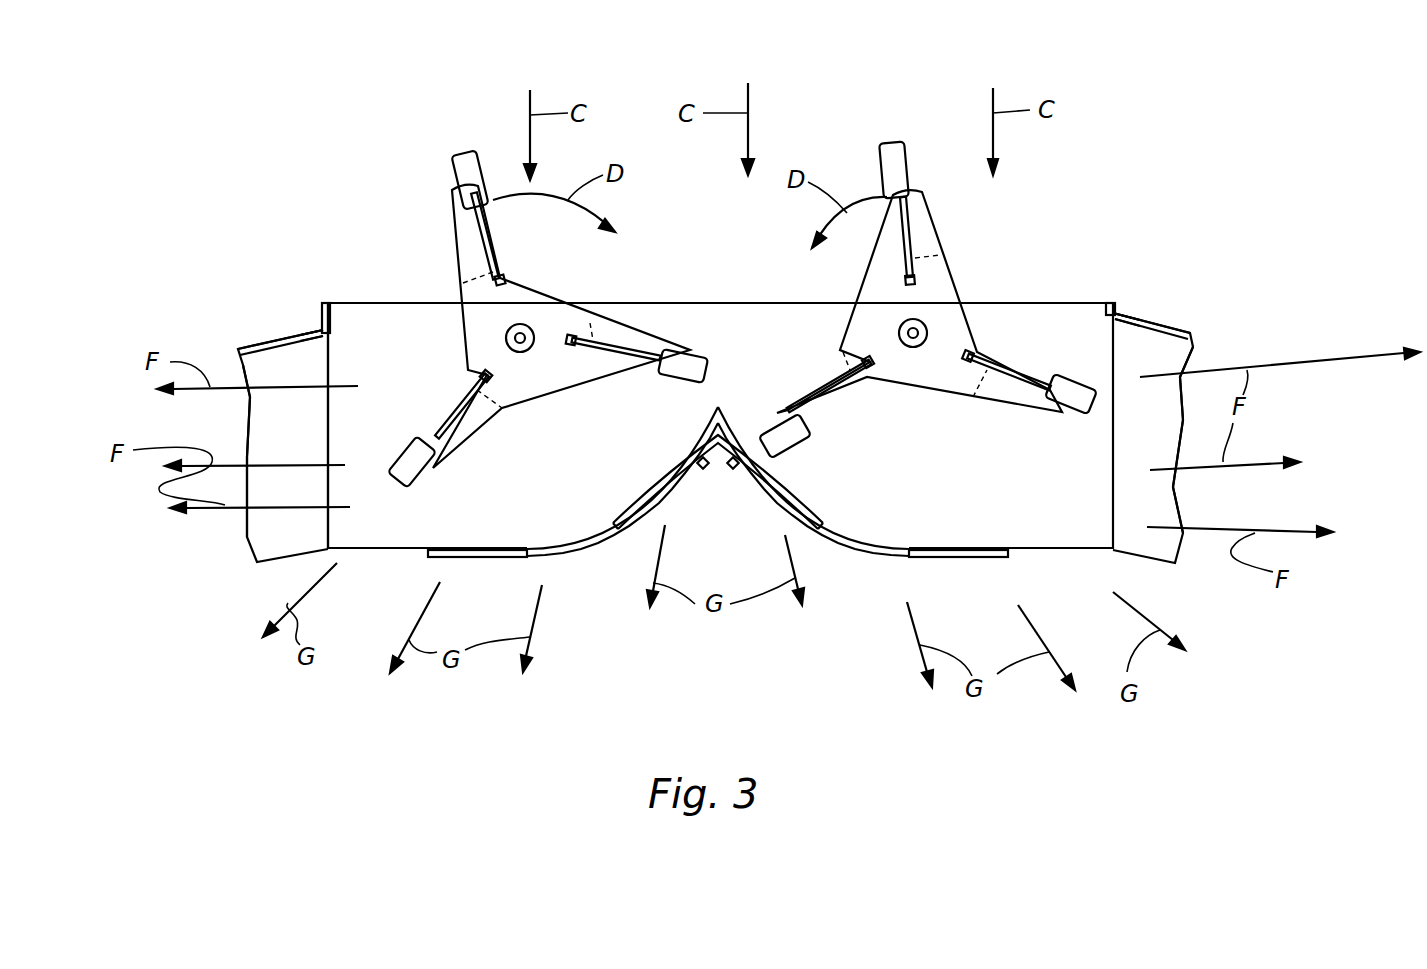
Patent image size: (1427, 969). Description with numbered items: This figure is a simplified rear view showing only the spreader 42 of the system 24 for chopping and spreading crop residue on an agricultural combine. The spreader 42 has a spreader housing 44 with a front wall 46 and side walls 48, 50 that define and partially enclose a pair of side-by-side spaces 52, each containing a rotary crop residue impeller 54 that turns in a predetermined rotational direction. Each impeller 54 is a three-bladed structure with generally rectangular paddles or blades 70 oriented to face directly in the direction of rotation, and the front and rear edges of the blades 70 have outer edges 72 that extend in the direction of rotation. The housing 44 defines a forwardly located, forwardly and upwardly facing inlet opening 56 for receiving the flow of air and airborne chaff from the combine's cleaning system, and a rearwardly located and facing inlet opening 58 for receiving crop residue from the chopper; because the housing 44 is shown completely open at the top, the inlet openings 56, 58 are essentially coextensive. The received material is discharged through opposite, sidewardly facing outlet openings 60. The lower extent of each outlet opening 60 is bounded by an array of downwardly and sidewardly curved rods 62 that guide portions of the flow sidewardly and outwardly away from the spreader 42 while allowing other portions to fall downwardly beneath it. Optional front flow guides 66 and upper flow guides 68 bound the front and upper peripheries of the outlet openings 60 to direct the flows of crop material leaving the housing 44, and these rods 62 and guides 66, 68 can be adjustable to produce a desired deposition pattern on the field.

The system for chopping and spreading crop residue 24 is at (1223, 129).
The spreader 42 is at (1113, 310).
The spreader housing 44 is at (1186, 275).
The side wall 50 is at (1120, 313).
The front wall 46 is at (1057, 301).
The side wall 48 is at (322, 330).
The side-by-side spaces 52 is at (495, 530).
The rotary crop residue impeller 54 is at (447, 198).
The inlet opening 56 is at (388, 255).
The inlet opening 58 is at (322, 332).
The outlet openings 60 is at (267, 422).
The curved rods 62 is at (432, 562).
The front flow guides 66 is at (240, 355).
The upper flow guides 68 is at (273, 340).
The blades 70 is at (498, 255).
The outer edges 72 is at (474, 150).